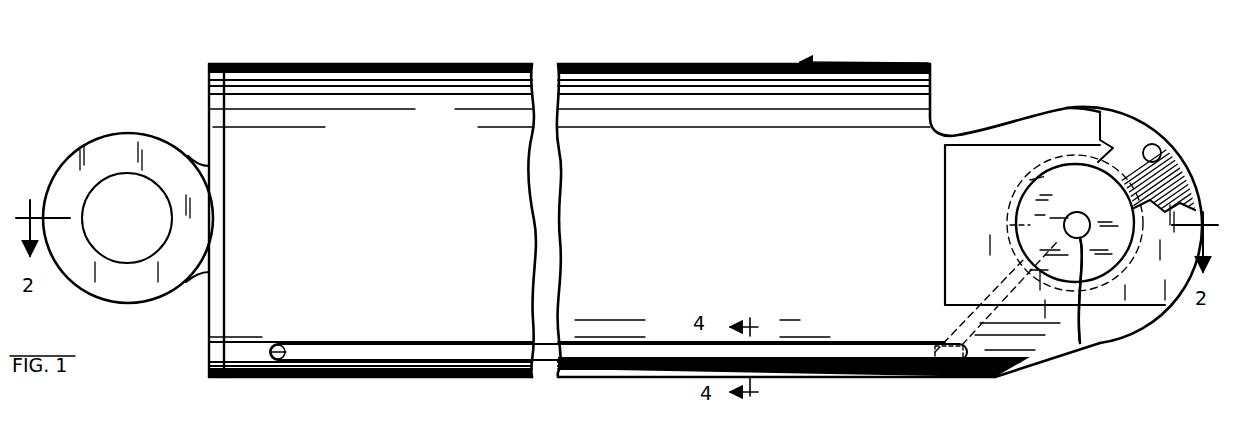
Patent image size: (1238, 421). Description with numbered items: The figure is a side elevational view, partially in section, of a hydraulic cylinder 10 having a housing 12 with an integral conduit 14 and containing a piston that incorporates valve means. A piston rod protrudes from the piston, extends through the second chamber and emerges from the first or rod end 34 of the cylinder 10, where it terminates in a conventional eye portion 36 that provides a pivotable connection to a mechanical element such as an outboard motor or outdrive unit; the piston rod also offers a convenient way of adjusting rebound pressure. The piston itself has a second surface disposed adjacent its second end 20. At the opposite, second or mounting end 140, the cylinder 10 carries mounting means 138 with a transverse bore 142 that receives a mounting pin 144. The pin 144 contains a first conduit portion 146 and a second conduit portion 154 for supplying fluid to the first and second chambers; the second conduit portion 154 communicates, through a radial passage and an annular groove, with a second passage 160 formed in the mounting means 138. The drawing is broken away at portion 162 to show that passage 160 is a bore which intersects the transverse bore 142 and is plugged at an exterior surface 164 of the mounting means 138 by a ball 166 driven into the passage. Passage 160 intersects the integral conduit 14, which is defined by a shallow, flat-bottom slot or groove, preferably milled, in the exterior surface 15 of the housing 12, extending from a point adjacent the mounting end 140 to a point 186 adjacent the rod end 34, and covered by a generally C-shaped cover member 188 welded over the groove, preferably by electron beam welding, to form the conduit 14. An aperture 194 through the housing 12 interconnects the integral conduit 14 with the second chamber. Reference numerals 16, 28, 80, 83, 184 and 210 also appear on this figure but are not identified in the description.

The hydraulic cylinder 10 is at (482, 420).
The housing 12 is at (452, 135).
The integral conduit 14 is at (381, 327).
The exterior surface 15 is at (590, 420).
The end portion 16 is at (579, 393).
The second end 20 is at (354, 420).
The channel 28 is at (815, 395).
The rod end 34 is at (204, 117).
The eye portion 36 is at (70, 140).
The rail 80 is at (609, 395).
The rail edge 83 is at (690, 395).
The mounting means 138 is at (1037, 103).
The mounting end 140 is at (944, 101).
The transverse bore 142 is at (1038, 182).
The mounting pin 144 is at (1038, 218).
The first conduit portion 146 is at (1101, 344).
The second conduit portion 154 is at (1080, 290).
The second passage 160 is at (1125, 170).
The broken-away portion 162 is at (1130, 140).
The exterior surface of mounting means 164 is at (1089, 107).
The ball 166 is at (1160, 149).
The rod end 184 is at (930, 340).
The point adjacent rod end 186 is at (280, 338).
The cover member 188 is at (476, 356).
The aperture 194 is at (290, 348).
The bottom plate 210 is at (320, 420).